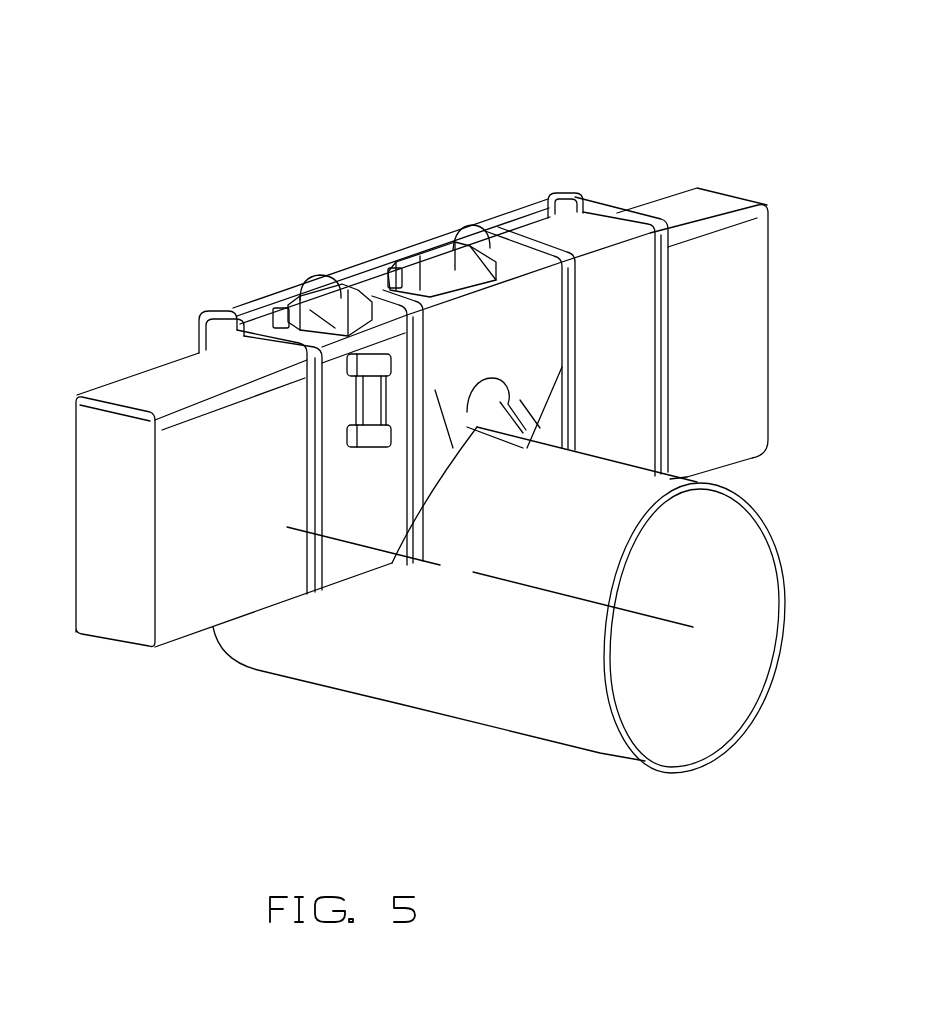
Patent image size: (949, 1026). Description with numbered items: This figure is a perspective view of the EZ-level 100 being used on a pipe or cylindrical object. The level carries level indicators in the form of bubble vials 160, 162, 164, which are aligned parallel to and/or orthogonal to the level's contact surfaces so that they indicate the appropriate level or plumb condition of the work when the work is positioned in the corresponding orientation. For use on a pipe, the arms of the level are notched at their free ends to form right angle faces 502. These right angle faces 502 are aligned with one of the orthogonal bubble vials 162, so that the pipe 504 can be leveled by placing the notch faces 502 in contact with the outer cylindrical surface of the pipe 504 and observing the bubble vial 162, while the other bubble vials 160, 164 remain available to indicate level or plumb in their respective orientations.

The housing assembly 100 is at (800, 115).
The bubble vial 160 is at (442, 267).
The bubble vial 162 is at (292, 288).
The bubble vial 164 is at (370, 402).
The right angle faces 502 is at (562, 367).
The pipe 504 is at (400, 707).